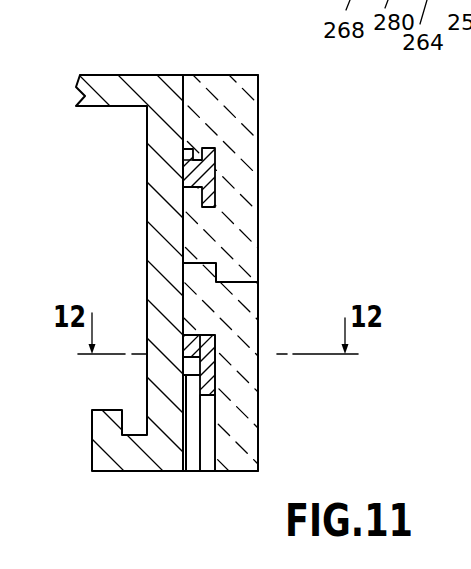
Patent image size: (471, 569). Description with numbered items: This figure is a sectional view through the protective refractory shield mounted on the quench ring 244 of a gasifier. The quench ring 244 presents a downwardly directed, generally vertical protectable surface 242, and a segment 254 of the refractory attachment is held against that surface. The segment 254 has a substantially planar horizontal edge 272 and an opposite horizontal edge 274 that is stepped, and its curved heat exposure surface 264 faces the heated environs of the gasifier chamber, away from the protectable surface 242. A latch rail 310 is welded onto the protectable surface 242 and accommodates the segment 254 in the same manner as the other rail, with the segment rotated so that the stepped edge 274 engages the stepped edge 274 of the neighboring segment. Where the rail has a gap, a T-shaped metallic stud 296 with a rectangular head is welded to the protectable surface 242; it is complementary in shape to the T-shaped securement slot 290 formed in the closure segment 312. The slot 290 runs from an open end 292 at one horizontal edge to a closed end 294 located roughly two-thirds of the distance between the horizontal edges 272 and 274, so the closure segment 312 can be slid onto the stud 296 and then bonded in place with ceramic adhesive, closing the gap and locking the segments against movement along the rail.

The quench ring 244 is at (123, 70).
The horizontal edge 272 is at (222, 75).
The segment 254 is at (264, 103).
The latch rail 310 is at (224, 150).
The protectable surface 242 is at (192, 153).
The heat exposure surface 264 is at (258, 180).
The stepped horizontal edge 274 is at (252, 232).
The closed end 294 is at (182, 345).
The T-shaped metallic stud 296 is at (232, 353).
The closure segment 312 is at (265, 433).
The T-shaped securement slot 290 is at (190, 478).
The open end 292 is at (208, 473).